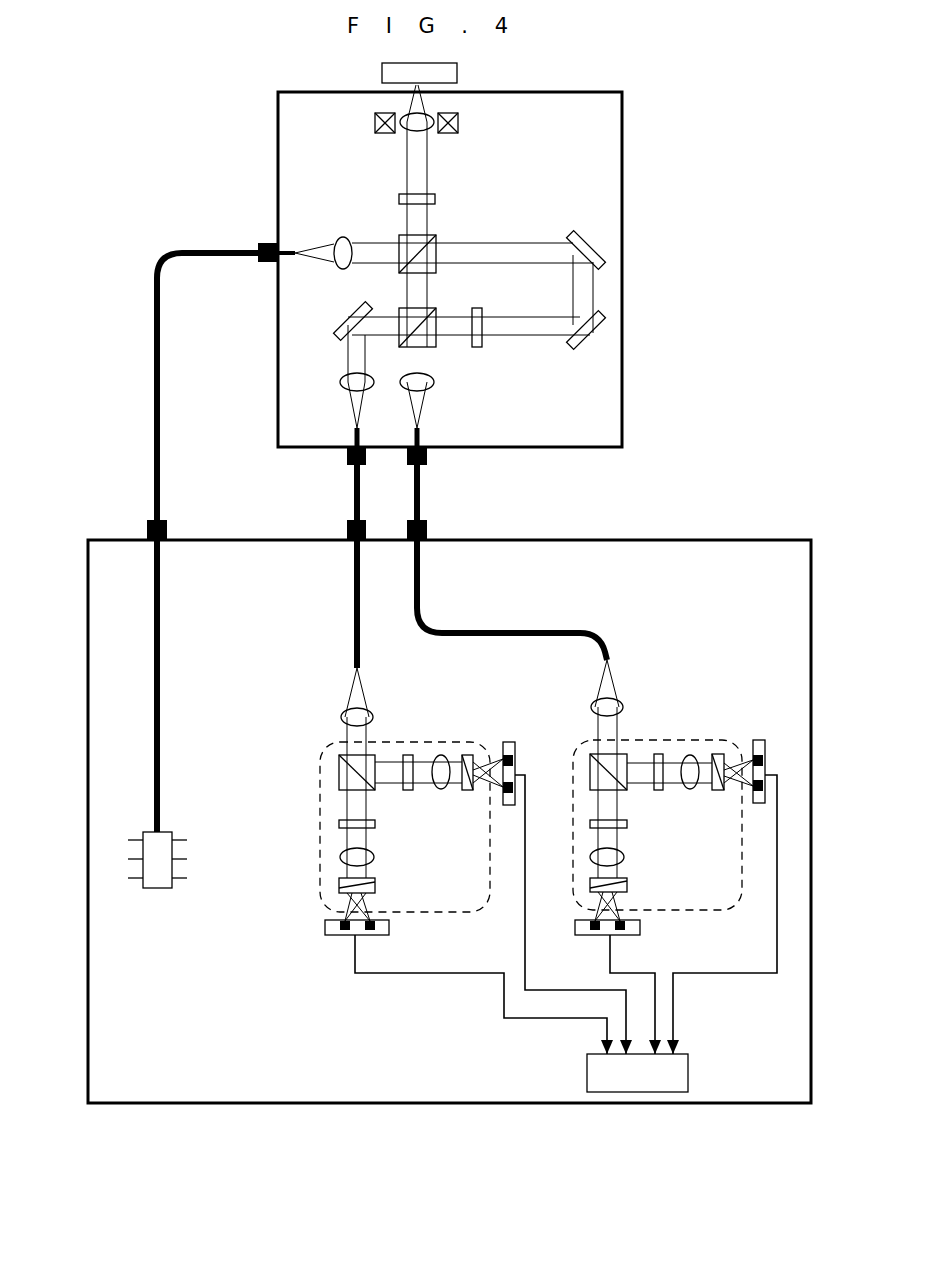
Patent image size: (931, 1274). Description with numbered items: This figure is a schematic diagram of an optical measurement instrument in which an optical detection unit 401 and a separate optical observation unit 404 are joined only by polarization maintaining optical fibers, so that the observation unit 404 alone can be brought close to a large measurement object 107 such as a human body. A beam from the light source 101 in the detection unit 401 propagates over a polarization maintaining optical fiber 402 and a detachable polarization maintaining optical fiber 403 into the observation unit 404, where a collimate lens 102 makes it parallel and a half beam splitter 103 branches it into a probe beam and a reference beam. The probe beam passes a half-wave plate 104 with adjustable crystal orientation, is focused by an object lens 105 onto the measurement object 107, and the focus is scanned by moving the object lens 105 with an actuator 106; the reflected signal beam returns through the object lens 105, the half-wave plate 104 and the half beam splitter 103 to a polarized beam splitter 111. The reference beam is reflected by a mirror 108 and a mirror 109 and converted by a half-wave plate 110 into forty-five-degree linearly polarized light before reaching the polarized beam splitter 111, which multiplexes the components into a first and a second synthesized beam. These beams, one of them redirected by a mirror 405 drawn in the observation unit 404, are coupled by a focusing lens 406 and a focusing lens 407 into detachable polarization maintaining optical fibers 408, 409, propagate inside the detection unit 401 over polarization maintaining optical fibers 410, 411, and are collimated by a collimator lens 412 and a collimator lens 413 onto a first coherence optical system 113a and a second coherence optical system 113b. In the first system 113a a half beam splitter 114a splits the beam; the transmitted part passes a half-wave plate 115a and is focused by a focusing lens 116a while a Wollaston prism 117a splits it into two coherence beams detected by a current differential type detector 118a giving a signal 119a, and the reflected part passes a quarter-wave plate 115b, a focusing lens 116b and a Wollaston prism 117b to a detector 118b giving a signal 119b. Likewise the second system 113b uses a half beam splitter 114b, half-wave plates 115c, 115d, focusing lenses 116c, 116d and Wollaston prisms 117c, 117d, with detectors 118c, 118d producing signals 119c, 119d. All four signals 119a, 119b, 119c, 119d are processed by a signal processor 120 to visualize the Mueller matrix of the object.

The light source 101 is at (155, 888).
The collimate lens 102 is at (334, 245).
The half beam splitter 103 is at (399, 240).
The λ/2 plate 104 is at (399, 199).
The object lens 105 is at (430, 118).
The actuator 106 is at (458, 123).
The measurement object 107 is at (382, 73).
The mirror 108 is at (590, 242).
The mirror 109 is at (600, 321).
The λ/2 plate 110 is at (477, 308).
The polarized beam splitter 111 is at (436, 340).
The first coherence optical system 113a is at (573, 900).
The second coherence optical system 113b is at (320, 748).
The half beam splitter 114a is at (590, 760).
The half beam splitter 114b is at (339, 770).
The λ/2 plate 115a is at (627, 824).
The λ/4 plate 115b is at (658, 754).
The λ/2 plate 115c is at (339, 824).
The λ/2 plate 115d is at (405, 755).
The focusing lens 116a is at (625, 857).
The focusing lens 116b is at (690, 755).
The focusing lens 116c is at (340, 857).
The focusing lens 116d is at (440, 790).
The Wollaston prism 117a is at (627, 882).
The Wollaston prism 117b is at (718, 754).
The Wollaston prism 117c is at (339, 886).
The Wollaston prism 117d is at (465, 755).
The current differential type detector 118a is at (640, 926).
The current differential type detector 118b is at (762, 740).
The detector 118c is at (348, 935).
The detector 118d is at (509, 742).
The signal 119a is at (613, 953).
The signal 119b is at (750, 975).
The signal 119c is at (504, 1000).
The signal 119d is at (525, 890).
The signal processor 120 is at (587, 1060).
The optical detection unit 401 is at (88, 885).
The polarization maintaining optical fiber 402 is at (157, 695).
The polarization maintaining optical fiber 403 is at (157, 432).
The optical observation unit 404 is at (278, 158).
The mirror 405 is at (345, 318).
The focusing lens 406 is at (434, 384).
The focusing lens 407 is at (340, 382).
The polarization maintaining optical fiber 408 is at (417, 492).
The polarization maintaining optical fiber 409 is at (357, 492).
The polarization maintaining optical fiber 410 is at (540, 633).
The polarization maintaining optical fiber 411 is at (357, 590).
The collimator lens 412 is at (618, 702).
The collimator lens 413 is at (347, 712).